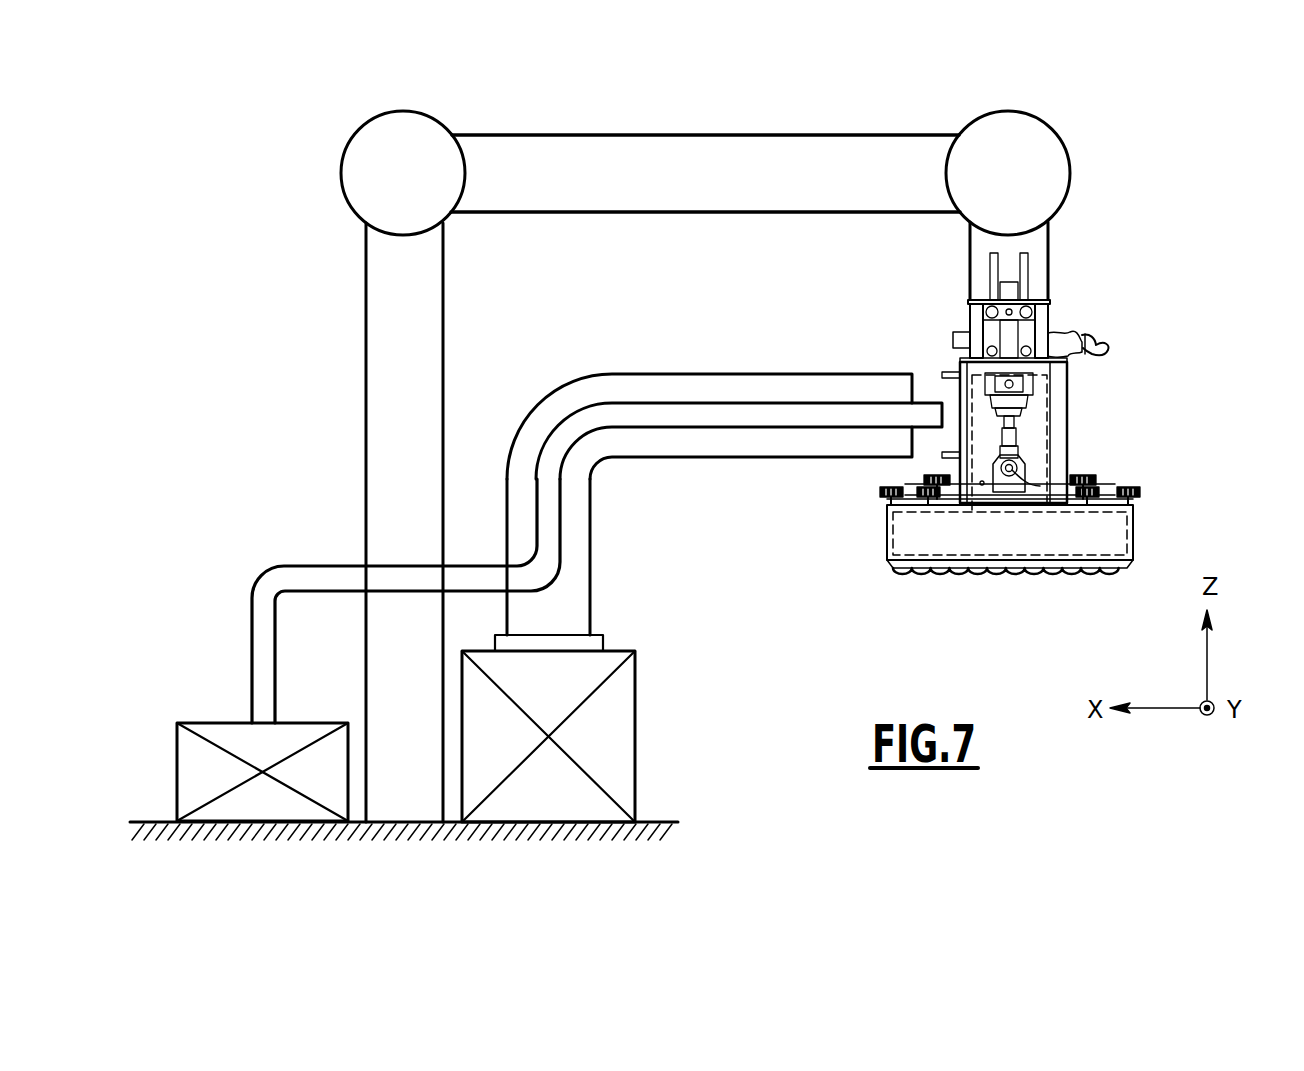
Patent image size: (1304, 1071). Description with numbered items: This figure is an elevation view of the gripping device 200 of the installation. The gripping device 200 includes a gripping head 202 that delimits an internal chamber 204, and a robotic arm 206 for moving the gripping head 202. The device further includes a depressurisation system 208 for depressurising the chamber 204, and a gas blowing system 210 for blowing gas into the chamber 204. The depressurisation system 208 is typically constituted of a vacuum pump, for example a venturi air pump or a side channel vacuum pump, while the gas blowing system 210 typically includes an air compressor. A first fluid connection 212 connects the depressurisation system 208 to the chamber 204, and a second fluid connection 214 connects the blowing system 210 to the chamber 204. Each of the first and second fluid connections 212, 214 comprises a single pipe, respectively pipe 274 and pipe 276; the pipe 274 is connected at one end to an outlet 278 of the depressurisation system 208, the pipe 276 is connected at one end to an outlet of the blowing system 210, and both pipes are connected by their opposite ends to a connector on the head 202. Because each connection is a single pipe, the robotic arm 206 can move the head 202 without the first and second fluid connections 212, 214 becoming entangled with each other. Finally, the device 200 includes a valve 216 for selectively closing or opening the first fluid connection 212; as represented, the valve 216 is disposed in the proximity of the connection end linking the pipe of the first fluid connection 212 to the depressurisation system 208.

The gripping device 200 is at (1138, 141).
The gripping head 202 is at (1058, 420).
The internal chamber 204 is at (1140, 540).
The robotic arm 206 is at (669, 143).
The depressurisation system 208 is at (250, 722).
The gas blowing system 210 is at (195, 722).
The first fluid connection 212 is at (592, 567).
The second fluid connection 214 is at (395, 572).
The valve 216 is at (595, 643).
The pipe 274 is at (752, 372).
The pipe 276 is at (650, 413).
The outlet 278 is at (582, 652).